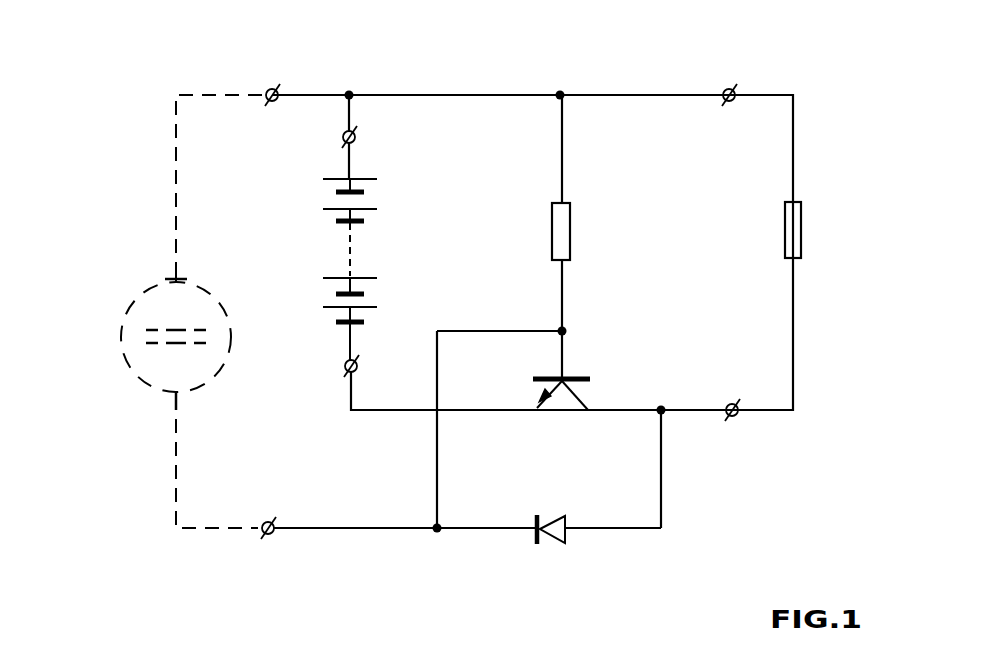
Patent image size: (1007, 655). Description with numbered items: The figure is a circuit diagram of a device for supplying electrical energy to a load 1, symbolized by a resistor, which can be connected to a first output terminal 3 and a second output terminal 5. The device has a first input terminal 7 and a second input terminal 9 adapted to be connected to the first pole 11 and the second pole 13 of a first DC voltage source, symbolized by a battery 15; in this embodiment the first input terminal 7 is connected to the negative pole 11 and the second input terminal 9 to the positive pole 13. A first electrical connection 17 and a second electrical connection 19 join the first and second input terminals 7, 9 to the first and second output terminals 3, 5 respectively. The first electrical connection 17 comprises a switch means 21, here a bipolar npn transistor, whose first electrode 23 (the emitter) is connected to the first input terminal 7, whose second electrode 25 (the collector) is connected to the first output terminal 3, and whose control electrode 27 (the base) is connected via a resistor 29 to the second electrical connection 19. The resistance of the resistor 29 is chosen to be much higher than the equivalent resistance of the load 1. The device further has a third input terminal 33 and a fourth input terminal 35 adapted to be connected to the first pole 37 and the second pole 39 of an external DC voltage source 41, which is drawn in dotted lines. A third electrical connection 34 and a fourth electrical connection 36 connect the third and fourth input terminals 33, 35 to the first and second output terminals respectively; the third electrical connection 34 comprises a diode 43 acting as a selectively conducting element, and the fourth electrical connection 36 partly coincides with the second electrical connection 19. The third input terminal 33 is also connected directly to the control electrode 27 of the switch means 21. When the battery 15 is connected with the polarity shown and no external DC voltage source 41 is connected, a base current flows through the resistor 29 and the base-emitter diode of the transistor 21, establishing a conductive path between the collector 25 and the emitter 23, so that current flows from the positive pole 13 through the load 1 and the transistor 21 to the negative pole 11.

The load 1 is at (803, 228).
The first output terminal 3 is at (734, 417).
The second output terminal 5 is at (727, 88).
The first input terminal 7 is at (346, 371).
The second input terminal 9 is at (342, 137).
The first pole 11 is at (338, 325).
The second pole 13 is at (324, 180).
The battery 15 is at (366, 245).
The first electrical connection 17 is at (392, 413).
The second electrical connection 19 is at (452, 93).
The switch means 21 is at (586, 380).
The first electrode 23 is at (537, 412).
The second electrode 25 is at (590, 412).
The control electrode 27 is at (592, 378).
The resistor 29 is at (572, 228).
The third input terminal 33 is at (272, 540).
The third electrical connection 34 is at (378, 532).
The fourth input terminal 35 is at (268, 90).
The fourth electrical connection 36 is at (326, 93).
The first pole 37 is at (172, 396).
The second pole 39 is at (172, 277).
The external DC voltage source 41 is at (120, 334).
The diode 43 is at (553, 546).